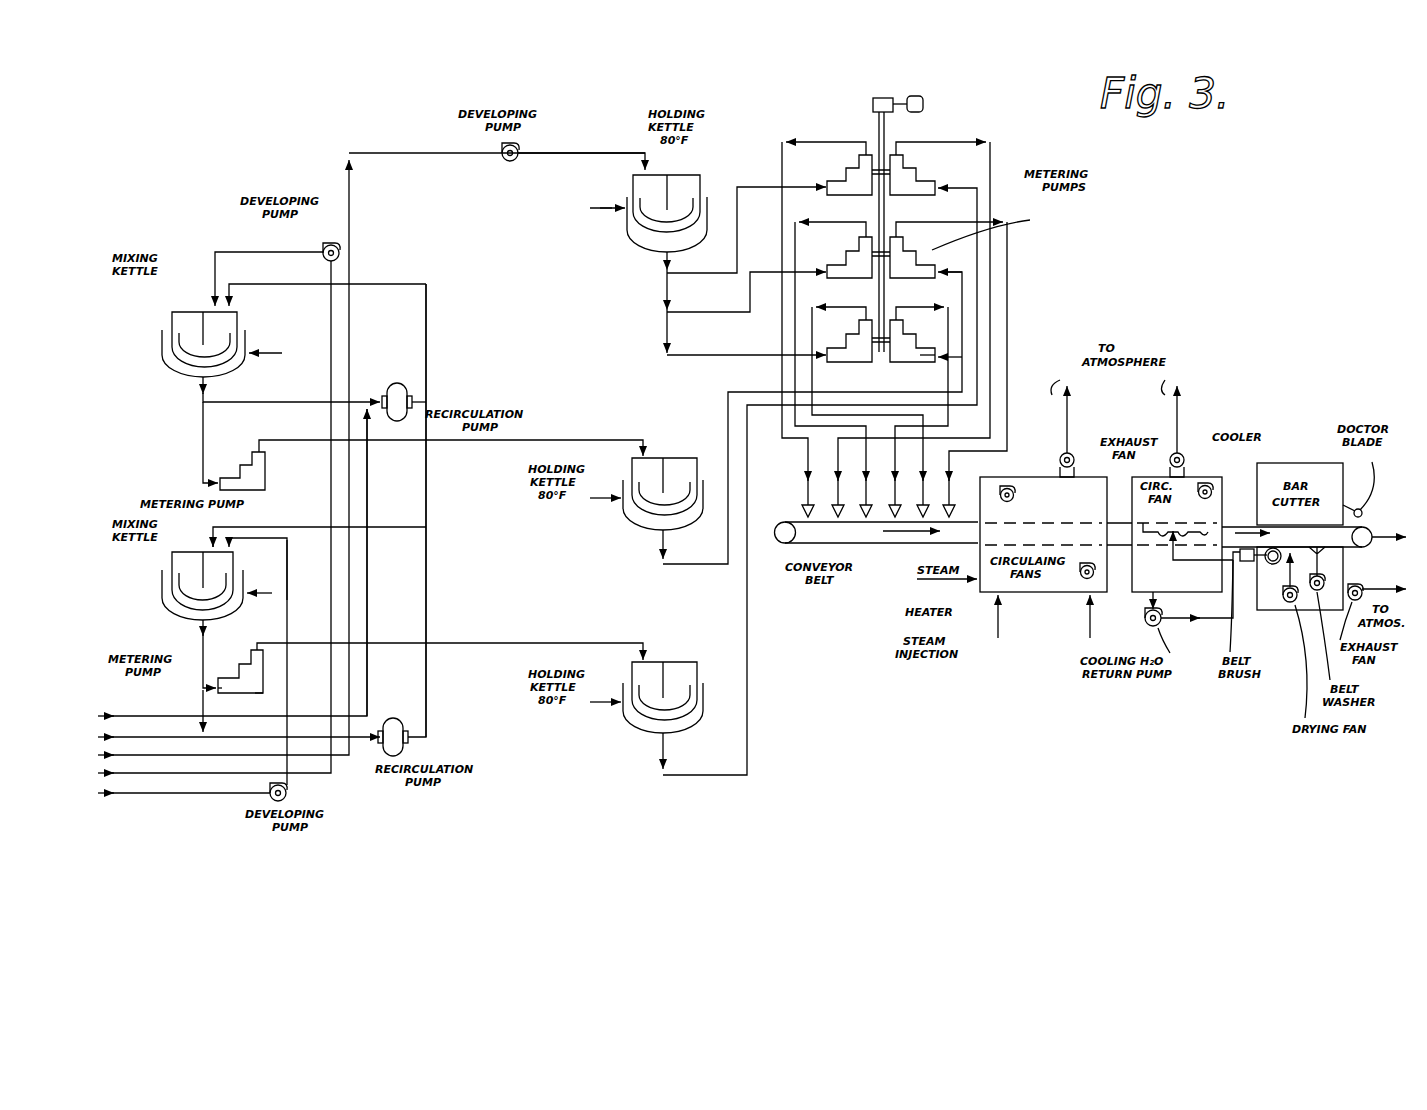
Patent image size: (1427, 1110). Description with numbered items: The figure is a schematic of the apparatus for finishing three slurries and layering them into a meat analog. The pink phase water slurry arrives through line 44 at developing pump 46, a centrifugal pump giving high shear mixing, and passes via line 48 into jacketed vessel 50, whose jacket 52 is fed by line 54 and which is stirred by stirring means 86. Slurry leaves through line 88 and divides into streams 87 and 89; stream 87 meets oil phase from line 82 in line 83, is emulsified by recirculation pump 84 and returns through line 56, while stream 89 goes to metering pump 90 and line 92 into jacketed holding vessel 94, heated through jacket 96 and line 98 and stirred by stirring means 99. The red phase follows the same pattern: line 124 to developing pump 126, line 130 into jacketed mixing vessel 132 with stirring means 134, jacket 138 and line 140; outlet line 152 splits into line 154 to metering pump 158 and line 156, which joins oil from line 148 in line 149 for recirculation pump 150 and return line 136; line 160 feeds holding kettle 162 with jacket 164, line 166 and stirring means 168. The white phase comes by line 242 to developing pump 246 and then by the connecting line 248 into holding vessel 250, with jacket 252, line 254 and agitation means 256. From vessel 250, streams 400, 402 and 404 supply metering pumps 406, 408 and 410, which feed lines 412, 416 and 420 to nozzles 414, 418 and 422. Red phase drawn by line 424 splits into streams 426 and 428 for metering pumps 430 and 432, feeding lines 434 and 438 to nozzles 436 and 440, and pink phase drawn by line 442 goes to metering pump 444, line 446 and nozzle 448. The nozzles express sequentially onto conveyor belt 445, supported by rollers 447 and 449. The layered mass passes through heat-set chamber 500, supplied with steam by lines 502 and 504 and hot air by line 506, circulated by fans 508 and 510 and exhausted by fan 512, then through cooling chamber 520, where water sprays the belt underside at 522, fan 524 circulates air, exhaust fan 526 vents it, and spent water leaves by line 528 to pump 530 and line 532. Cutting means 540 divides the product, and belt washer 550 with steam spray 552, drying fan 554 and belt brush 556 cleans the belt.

The line 44 is at (168, 795).
The developing pump 46 is at (292, 795).
The line 48 is at (287, 600).
The jacketed vessel 50 is at (172, 563).
The jacket 52 is at (162, 605).
The line 54 is at (263, 598).
The line 56 is at (270, 530).
The line 82 is at (152, 737).
The line 83 is at (258, 741).
The recirculation pump 84 is at (410, 742).
The stirring means 86 is at (192, 558).
The line 87 is at (204, 695).
The line 88 is at (198, 637).
The stream 89 is at (210, 672).
The metering pump 90 is at (241, 696).
The line 92 is at (478, 642).
The jacketed holding vessel 94 is at (690, 673).
The jacket 96 is at (660, 740).
The line 98 is at (592, 706).
The stirring means 99 is at (672, 666).
The line 124 is at (168, 773).
The developing pump 126 is at (330, 246).
The line 130 is at (276, 253).
The jacketed mixing vessel 132 is at (172, 323).
The stirring means 134 is at (198, 322).
The line 136 is at (236, 290).
The jacket 138 is at (168, 372).
The line 140 is at (268, 356).
The line 148 is at (166, 716).
The line 149 is at (371, 410).
The recirculation pump 150 is at (395, 384).
The line 152 is at (200, 397).
The line 154 is at (200, 455).
The line 156 is at (285, 405).
The metering pump 158 is at (266, 480).
The line 160 is at (279, 442).
The jacketed holding kettle 162 is at (628, 464).
The jacket 164 is at (640, 531).
The line 166 is at (598, 505).
The stirring means 168 is at (672, 472).
The line 242 is at (165, 755).
The developing pump 246 is at (510, 165).
The line to holding kettle 248 is at (589, 155).
The jacketed holding vessel 250 is at (703, 180).
The jacket 252 is at (660, 250).
The line 254 is at (600, 211).
The agitation means 256 is at (620, 191).
The stream 400 is at (731, 280).
The stream 402 is at (731, 316).
The stream 404 is at (707, 358).
The metering pump 406 is at (837, 178).
The metering pump 408 is at (836, 260).
The metering pump 410 is at (846, 345).
The line 412 is at (818, 142).
The nozzle 414 is at (802, 511).
The line 416 is at (827, 221).
The nozzle 418 is at (878, 520).
The line 420 is at (841, 307).
The nozzle 422 is at (929, 532).
The line 424 is at (692, 567).
The stream 426 is at (960, 356).
The stream 428 is at (958, 270).
The metering pump 430 is at (918, 358).
The metering pump 432 is at (913, 276).
The line 434 is at (946, 338).
The nozzle 436 is at (906, 546).
The line 438 is at (924, 222).
The nozzle 440 is at (955, 504).
The line 442 is at (735, 778).
The metering pump 444 is at (920, 185).
The conveyor belt 445 is at (903, 547).
The line 446 is at (963, 142).
The axially rotatable cylindrical means 447 is at (778, 540).
The nozzle 448 is at (835, 545).
The axially rotatable cylindrical means 449 is at (1395, 503).
The heat-set chamber 500 is at (1098, 515).
The line 502 is at (920, 579).
The line 504 is at (999, 640).
The line 506 is at (1086, 612).
The circulating fan 508 is at (1080, 579).
The circulating fan 510 is at (1018, 496).
The exhaust fan 512 is at (1059, 460).
The cooling chamber 520 is at (1200, 587).
The cooling water spray 522 is at (1167, 540).
The fan 524 is at (1213, 490).
The exhaust fan 526 is at (1186, 455).
The line 528 is at (1150, 603).
The pump 530 is at (1160, 628).
The line 532 is at (1218, 623).
The cutting means 540 is at (1300, 462).
The belt washer 550 is at (1346, 555).
The steam spray means 552 is at (1326, 562).
The drying fan 554 is at (1290, 605).
The belt brush means 556 is at (1272, 563).